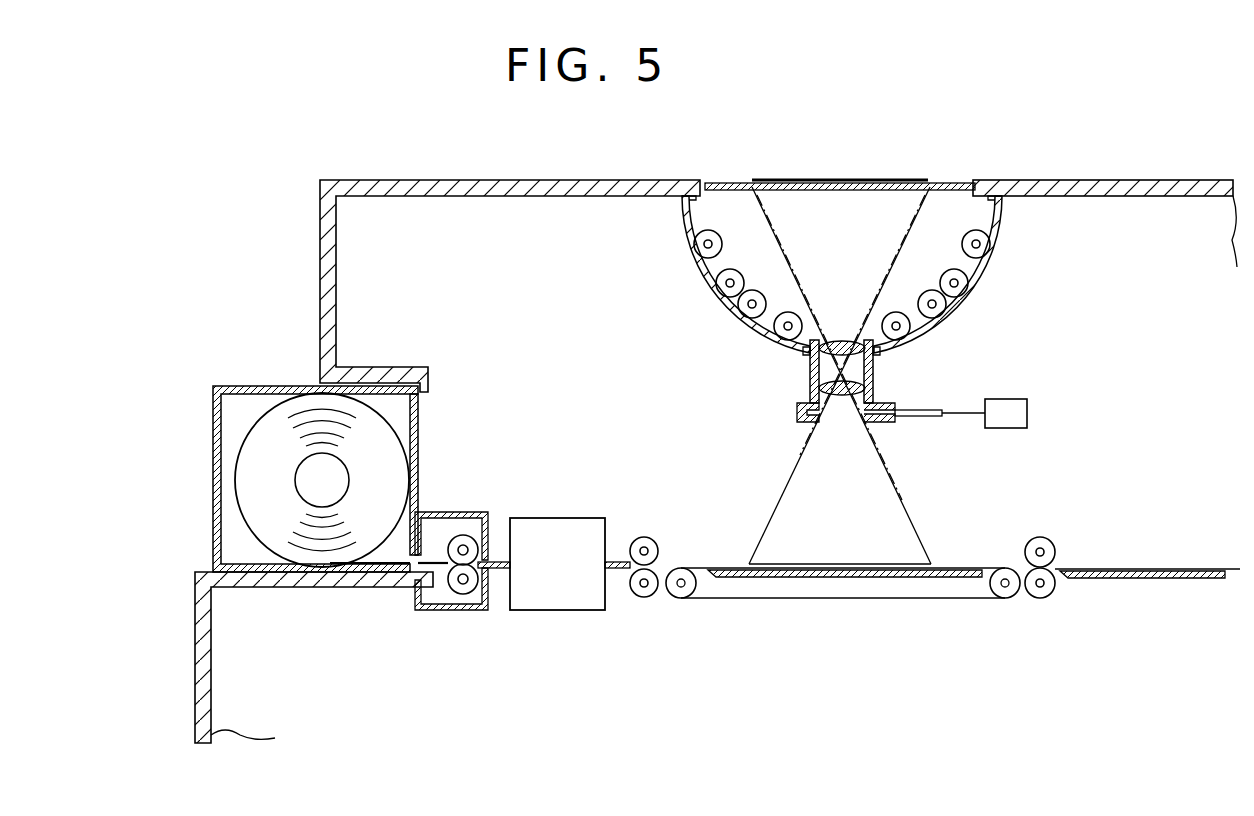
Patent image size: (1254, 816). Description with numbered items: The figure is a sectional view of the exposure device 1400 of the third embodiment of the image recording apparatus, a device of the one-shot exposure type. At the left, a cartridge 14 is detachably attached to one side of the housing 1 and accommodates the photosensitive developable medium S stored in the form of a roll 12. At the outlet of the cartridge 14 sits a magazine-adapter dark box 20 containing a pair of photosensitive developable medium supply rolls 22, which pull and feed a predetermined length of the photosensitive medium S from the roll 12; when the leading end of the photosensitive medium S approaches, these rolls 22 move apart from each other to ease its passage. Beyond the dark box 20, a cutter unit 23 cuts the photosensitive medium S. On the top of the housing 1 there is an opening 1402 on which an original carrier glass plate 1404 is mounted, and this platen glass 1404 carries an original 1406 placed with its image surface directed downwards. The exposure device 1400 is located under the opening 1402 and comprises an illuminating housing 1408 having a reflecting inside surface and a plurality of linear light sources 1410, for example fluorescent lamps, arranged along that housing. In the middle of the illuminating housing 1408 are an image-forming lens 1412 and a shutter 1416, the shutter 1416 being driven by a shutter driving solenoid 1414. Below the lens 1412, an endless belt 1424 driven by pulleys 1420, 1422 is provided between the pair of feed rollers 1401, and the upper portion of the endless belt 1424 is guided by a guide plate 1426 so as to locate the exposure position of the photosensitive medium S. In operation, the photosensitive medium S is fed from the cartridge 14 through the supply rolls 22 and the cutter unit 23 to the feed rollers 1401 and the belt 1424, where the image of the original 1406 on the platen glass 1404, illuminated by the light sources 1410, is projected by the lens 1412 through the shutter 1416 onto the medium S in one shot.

The housing 1 is at (325, 288).
The roll 12 is at (250, 505).
The cartridge 14 is at (214, 470).
The magazine-adapter dark box 20 is at (450, 512).
The photosensitive developable medium supply rolls 22 is at (450, 552).
The cutter unit 23 is at (595, 603).
The photosensitive developable medium S is at (338, 572).
The exposure device 1400 is at (740, 165).
The feed rollers 1401 is at (647, 595).
The opening 1402 is at (875, 246).
The original carrier glass plate 1404 is at (958, 185).
The original 1406 is at (898, 180).
The illuminating housing 1408 is at (998, 266).
The linear light sources 1410 is at (948, 312).
The image-forming lens 1412 is at (875, 372).
The shutter driving solenoid 1414 is at (1017, 405).
The shutter 1416 is at (855, 432).
The pulley 1420 is at (684, 592).
The pulley 1422 is at (1006, 590).
The endless belt 1424 is at (855, 610).
The guide plate 1426 is at (866, 577).